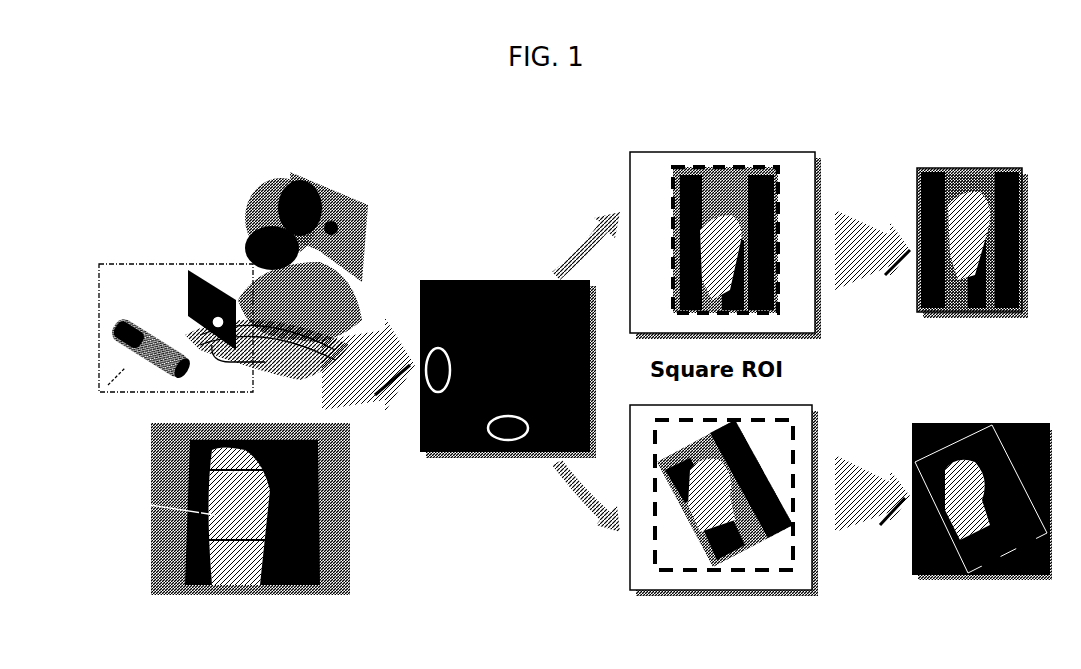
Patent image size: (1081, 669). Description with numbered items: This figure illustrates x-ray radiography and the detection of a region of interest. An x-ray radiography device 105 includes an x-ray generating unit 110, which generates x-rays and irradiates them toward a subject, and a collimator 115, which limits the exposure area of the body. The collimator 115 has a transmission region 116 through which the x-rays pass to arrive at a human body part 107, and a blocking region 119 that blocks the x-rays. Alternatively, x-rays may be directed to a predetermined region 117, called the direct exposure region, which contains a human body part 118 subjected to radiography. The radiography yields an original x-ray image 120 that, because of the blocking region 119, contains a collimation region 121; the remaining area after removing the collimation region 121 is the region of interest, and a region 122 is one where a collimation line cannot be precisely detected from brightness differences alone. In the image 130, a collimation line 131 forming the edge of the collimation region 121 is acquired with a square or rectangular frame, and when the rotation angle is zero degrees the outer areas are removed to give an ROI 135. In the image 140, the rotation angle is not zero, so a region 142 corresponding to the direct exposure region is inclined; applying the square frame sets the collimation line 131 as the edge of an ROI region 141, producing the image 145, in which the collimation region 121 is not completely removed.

The x-ray radiography device 105 is at (98, 331).
The human body part 107 is at (272, 202).
The x-ray generating unit 110 is at (127, 325).
The collimator 115 is at (200, 280).
The transmission region 116 is at (190, 300).
The predetermined region 117 is at (282, 514).
The human body part 118 is at (300, 560).
The blocking region 119 is at (265, 362).
The original x-ray image 120 is at (508, 280).
The collimation region 121 is at (438, 400).
The region 122 is at (508, 441).
The image 130 is at (757, 152).
The collimation line 131 is at (780, 188).
The ROI 135 is at (975, 168).
The image 140 is at (757, 405).
The ROI region 141 is at (728, 572).
The region 142 is at (762, 470).
The image 145 is at (975, 423).